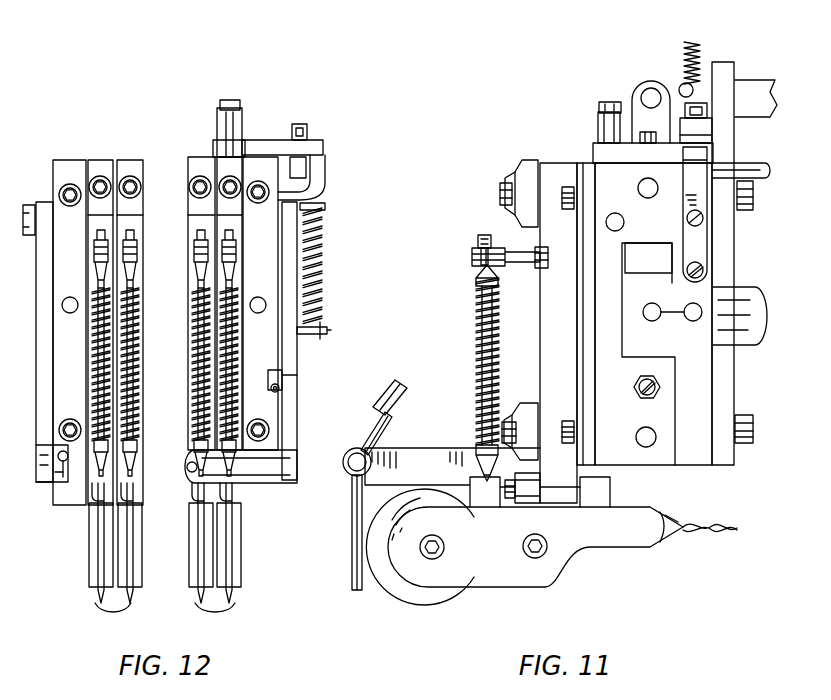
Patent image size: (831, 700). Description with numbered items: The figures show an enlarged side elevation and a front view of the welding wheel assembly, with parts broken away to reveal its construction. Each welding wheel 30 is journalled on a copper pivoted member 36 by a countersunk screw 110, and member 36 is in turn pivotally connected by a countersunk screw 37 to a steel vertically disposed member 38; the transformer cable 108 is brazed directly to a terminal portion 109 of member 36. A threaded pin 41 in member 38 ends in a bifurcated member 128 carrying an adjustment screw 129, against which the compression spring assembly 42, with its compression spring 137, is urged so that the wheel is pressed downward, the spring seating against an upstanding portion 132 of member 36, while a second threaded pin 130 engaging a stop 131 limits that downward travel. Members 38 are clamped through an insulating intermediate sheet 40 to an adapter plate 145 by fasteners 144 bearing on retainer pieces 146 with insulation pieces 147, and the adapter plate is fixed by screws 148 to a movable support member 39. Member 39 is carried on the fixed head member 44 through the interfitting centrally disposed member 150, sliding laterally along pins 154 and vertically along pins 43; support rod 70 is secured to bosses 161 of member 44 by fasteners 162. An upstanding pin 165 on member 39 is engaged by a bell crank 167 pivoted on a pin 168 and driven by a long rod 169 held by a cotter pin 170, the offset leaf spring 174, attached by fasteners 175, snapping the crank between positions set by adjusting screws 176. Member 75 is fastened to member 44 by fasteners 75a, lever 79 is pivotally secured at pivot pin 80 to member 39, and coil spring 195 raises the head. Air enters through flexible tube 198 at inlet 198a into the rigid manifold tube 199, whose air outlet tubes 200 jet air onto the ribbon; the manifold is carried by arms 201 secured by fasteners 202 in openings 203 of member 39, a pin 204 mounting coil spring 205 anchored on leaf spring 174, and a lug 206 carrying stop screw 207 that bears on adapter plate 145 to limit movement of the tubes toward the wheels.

In FIG. 12, the wheel 30 is at (165, 618).
In FIG. 11, the wheel 30 is at (403, 596).
In FIG. 11, the pivoted member 36 is at (537, 588).
In FIG. 11, the countersunk screw 37 is at (533, 558).
In FIG. 12, the vertically disposed member 38 is at (188, 245).
In FIG. 11, the vertically disposed member 38 is at (545, 302).
In FIG. 11, the movable support member 39 is at (630, 465).
In FIG. 11, the intermediate sheet 40 is at (588, 163).
In FIG. 11, the threaded pin 41 is at (526, 265).
In FIG. 12, the compression spring assembly 42 is at (189, 334).
In FIG. 11, the compression spring assembly 42 is at (472, 340).
In FIG. 11, the pins 43 is at (662, 132).
In FIG. 11, the fixed head member 44 is at (690, 465).
In FIG. 11, the unit support rod 70 is at (765, 305).
In FIG. 11, the fore member 75 is at (733, 403).
In FIG. 11, the fasteners 75a is at (755, 200).
In FIG. 11, the lever 79 is at (737, 80).
In FIG. 11, the pivot pin 80 is at (650, 88).
In FIG. 11, the transformer lead or cable 108 is at (705, 524).
In FIG. 11, the terminal portion 109 is at (612, 545).
In FIG. 11, the countersunk screw 110 is at (444, 547).
In FIG. 11, the bifurcated member 128 is at (490, 248).
In FIG. 11, the adjustment screw 129 is at (478, 240).
In FIG. 11, the second threaded pin 130 is at (520, 503).
In FIG. 11, the stop 131 is at (595, 497).
In FIG. 11, the second angularly bent upstanding portion 132 is at (482, 498).
In FIG. 11, the compression spring 137 is at (476, 372).
In FIG. 12, the fasteners 144 is at (140, 187).
In FIG. 11, the fasteners 144 is at (503, 182).
In FIG. 12, the adapter plate 145 is at (72, 168).
In FIG. 11, the adapter plate 145 is at (588, 163).
In FIG. 12, the retainer pieces 146 is at (135, 165).
In FIG. 11, the retainer pieces 146 is at (512, 176).
In FIG. 11, the insulation pieces 147 is at (535, 160).
In FIG. 12, the screws 148 is at (78, 207).
In FIG. 11, the screws 148 is at (562, 207).
In FIG. 11, the centrally disposed member 150 is at (648, 258).
In FIG. 11, the pins 154 is at (640, 192).
In FIG. 11, the bosses 161 is at (720, 355).
In FIG. 11, the fasteners 162 is at (676, 306).
In FIG. 12, the upstanding pin 165 is at (217, 122).
In FIG. 11, the upstanding pin 165 is at (608, 102).
In FIG. 12, the bell crank 167 is at (262, 140).
In FIG. 11, the bell crank 167 is at (648, 160).
In FIG. 11, the pin 168 is at (770, 96).
In FIG. 12, the long rod 169 is at (320, 165).
In FIG. 11, the long rod 169 is at (752, 173).
In FIG. 12, the cotter pin 170 is at (307, 130).
In FIG. 11, the cotter pin 170 is at (712, 118).
In FIG. 12, the offset leaf spring 174 is at (326, 184).
In FIG. 11, the offset leaf spring 174 is at (708, 243).
In FIG. 11, the fasteners 175 is at (708, 268).
In FIG. 11, the adjusting screws 176 is at (634, 388).
In FIG. 11, the coil spring 195 is at (684, 48).
In FIG. 11, the flexible tube 198 is at (386, 392).
In FIG. 11, the inlet 198a is at (386, 432).
In FIG. 12, the air manifold tube 199 is at (58, 483).
In FIG. 11, the air manifold tube 199 is at (350, 474).
In FIG. 12, the air outlet tubes 200 is at (200, 548).
In FIG. 11, the air outlet tubes 200 is at (352, 545).
In FIG. 12, the arm 201 is at (36, 440).
In FIG. 12, the fastener 202 is at (30, 210).
In FIG. 11, the openings 203 is at (622, 224).
In FIG. 12, the pin 204 is at (331, 331).
In FIG. 12, the coil spring 205 is at (322, 280).
In FIG. 12, the lug 206 is at (282, 372).
In FIG. 12, the stop screw 207 is at (280, 388).